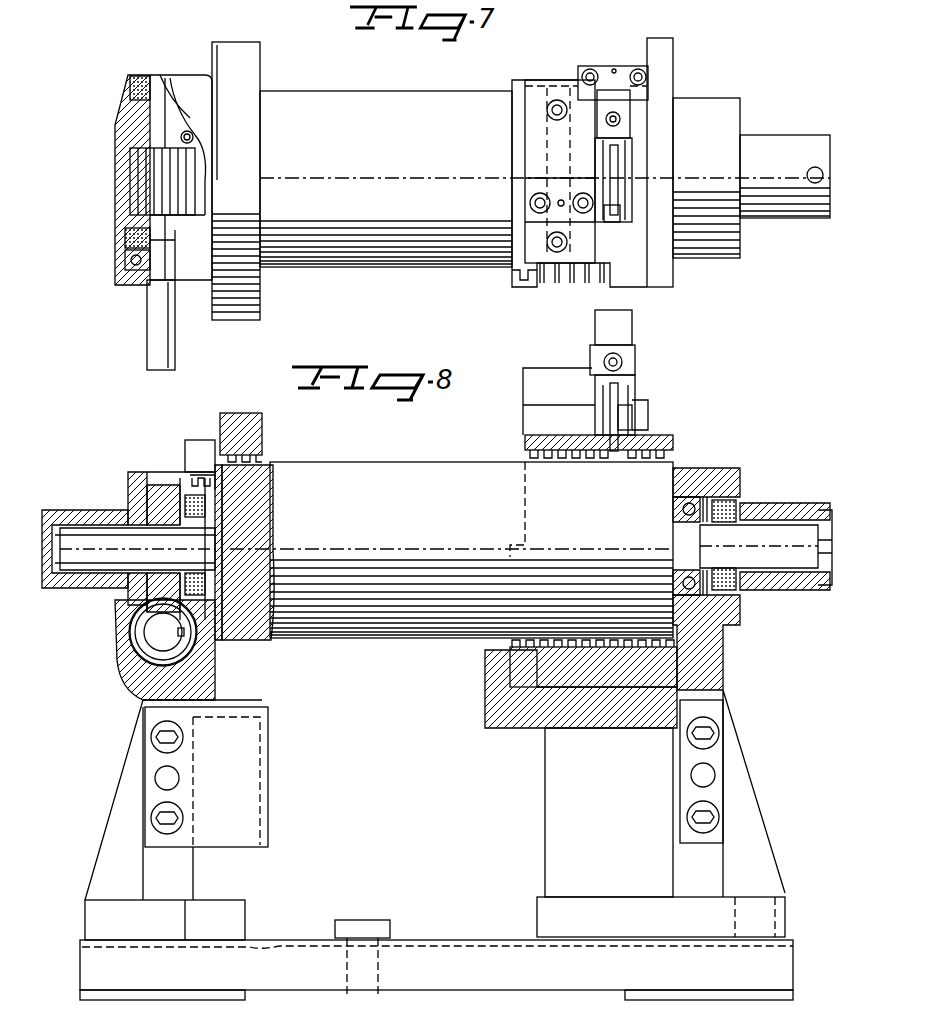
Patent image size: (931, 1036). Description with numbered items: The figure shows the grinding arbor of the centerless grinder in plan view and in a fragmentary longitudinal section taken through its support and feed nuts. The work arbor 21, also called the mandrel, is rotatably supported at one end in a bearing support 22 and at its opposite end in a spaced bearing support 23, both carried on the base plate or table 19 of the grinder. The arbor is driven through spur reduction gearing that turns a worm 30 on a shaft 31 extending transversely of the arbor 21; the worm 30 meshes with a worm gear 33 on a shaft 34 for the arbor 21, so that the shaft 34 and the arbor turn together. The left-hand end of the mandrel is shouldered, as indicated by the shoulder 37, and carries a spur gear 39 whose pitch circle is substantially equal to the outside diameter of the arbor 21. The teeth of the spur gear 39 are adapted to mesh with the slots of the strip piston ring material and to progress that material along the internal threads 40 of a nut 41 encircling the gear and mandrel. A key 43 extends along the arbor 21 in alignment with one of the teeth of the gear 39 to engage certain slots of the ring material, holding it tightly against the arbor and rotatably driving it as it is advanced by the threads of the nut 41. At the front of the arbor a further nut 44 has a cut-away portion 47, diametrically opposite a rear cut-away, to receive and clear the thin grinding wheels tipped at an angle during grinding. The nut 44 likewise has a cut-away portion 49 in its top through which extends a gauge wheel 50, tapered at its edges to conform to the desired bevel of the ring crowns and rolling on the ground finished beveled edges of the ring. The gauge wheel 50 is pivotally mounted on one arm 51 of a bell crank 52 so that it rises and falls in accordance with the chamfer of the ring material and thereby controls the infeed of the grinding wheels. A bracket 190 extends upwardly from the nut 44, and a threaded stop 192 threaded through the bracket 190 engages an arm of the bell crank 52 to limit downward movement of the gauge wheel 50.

In FIG. 8, the base plate or table 19 is at (452, 940).
In FIG. 7, the work arbor 21 is at (400, 258).
In FIG. 8, the work arbor 21 is at (432, 618).
In FIG. 7, the bearing support 22 is at (118, 100).
In FIG. 8, the bearing support 22 is at (145, 697).
In FIG. 7, the bearing support 23 is at (720, 100).
In FIG. 8, the bearing support 23 is at (712, 470).
In FIG. 7, the worm 30 is at (148, 195).
In FIG. 8, the worm 30 is at (132, 650).
In FIG. 7, the shaft 31 is at (158, 310).
In FIG. 8, the shaft 31 is at (150, 627).
In FIG. 8, the worm gear 33 is at (145, 490).
In FIG. 8, the shaft 34 is at (150, 552).
In FIG. 8, the shoulder 37 is at (240, 495).
In FIG. 8, the spur gear 39 is at (212, 455).
In FIG. 8, the internal threads 40 is at (262, 460).
In FIG. 8, the nut 41 is at (262, 412).
In FIG. 8, the key 43 is at (500, 462).
In FIG. 7, the nut 44 is at (515, 78).
In FIG. 8, the nut 44 is at (663, 437).
In FIG. 7, the cut-away portion 47 is at (548, 283).
In FIG. 7, the cut-away portion 49 is at (614, 222).
In FIG. 8, the cut-away portion 49 is at (625, 415).
In FIG. 7, the gauge wheel 50 is at (618, 206).
In FIG. 8, the gauge wheel 50 is at (616, 392).
In FIG. 7, the arm 51 is at (628, 176).
In FIG. 8, the arm 51 is at (640, 420).
In FIG. 7, the bell crank 52 is at (638, 148).
In FIG. 8, the bell crank 52 is at (598, 396).
In FIG. 8, the bracket 190 is at (523, 368).
In FIG. 8, the threaded stop 192 is at (598, 352).